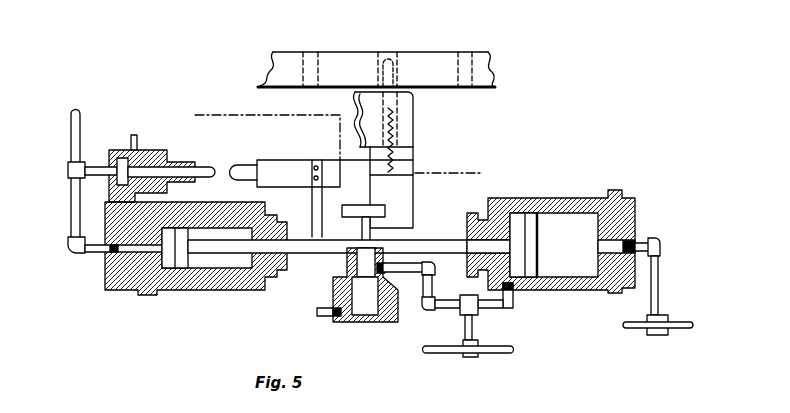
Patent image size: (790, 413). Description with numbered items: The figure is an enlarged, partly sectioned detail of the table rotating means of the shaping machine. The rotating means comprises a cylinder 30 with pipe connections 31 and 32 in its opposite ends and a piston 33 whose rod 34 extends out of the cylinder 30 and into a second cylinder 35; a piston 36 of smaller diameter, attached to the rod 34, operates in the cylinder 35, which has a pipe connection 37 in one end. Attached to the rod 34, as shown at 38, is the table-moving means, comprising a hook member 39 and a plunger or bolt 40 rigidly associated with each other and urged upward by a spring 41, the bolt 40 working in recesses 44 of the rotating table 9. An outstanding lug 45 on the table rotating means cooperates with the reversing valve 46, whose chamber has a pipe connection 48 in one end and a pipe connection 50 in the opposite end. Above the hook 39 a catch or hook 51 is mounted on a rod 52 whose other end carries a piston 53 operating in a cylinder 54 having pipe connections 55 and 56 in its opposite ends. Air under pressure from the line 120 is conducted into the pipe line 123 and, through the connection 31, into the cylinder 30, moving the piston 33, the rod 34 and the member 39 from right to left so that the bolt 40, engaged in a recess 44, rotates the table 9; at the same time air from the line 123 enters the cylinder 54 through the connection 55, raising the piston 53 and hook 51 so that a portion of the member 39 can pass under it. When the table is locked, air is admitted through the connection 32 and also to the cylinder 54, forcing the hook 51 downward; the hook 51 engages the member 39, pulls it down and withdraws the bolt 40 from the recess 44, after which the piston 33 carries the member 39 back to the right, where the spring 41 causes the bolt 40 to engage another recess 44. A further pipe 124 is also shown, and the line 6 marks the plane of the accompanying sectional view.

The rotating table 9 is at (432, 66).
The recesses 44 is at (311, 68).
The plunger or bolt 40 is at (395, 80).
The hook member 39 is at (410, 178).
The spring 41 is at (388, 112).
The section line 6 is at (215, 113).
The outstanding lug 45 is at (237, 171).
The attachment of table-moving means 38 is at (315, 247).
The catch or hook 51 is at (360, 210).
The rod 52 is at (362, 228).
The line 120 is at (73, 133).
The pipe connection 48 is at (94, 167).
The pipe connection 50 is at (134, 136).
The reversing valve 46 is at (200, 169).
The cylinder 35 is at (215, 280).
The pipe connection 37 is at (96, 254).
The piston 36 is at (182, 258).
The rod 34 is at (430, 245).
The cylinder 30 is at (570, 200).
The piston 33 is at (531, 225).
The pipe connection 31 is at (641, 245).
The pipe line 123 is at (668, 328).
The pipe connection 32 is at (510, 300).
The piston 53 is at (393, 303).
The cylinder 54 is at (368, 298).
The pipe connection 55 is at (323, 317).
The pipe connection 56 is at (405, 270).
The pipe 124 is at (497, 351).